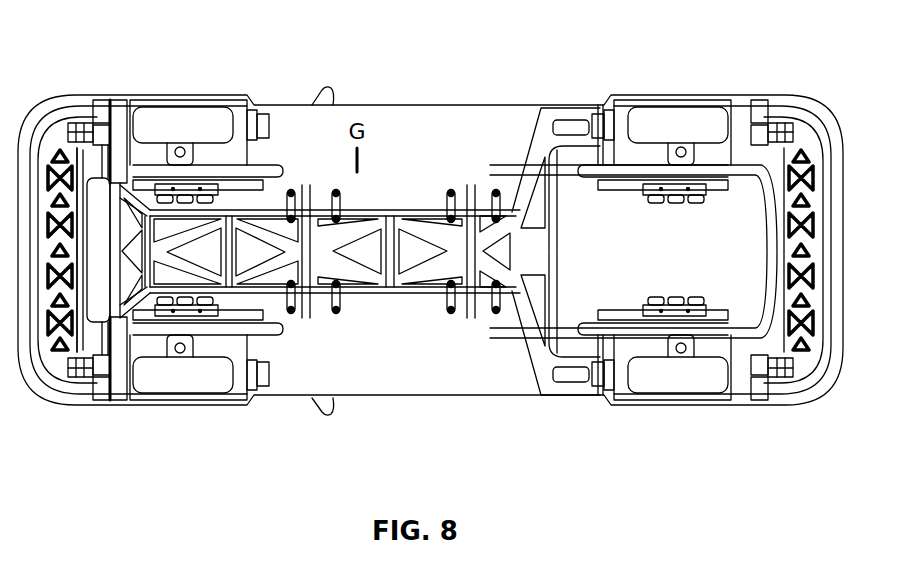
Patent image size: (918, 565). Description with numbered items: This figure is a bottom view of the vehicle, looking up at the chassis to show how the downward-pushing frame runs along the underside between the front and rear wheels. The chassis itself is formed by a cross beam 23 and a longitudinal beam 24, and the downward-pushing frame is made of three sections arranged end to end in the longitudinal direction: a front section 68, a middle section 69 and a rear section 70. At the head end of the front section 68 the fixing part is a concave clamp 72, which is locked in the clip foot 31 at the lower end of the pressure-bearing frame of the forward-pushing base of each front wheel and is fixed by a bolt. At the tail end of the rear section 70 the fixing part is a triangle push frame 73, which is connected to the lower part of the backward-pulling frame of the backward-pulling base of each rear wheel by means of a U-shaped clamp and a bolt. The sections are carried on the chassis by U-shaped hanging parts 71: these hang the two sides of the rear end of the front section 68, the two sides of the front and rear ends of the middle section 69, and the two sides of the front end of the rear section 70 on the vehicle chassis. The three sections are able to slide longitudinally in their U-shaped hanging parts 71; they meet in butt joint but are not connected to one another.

The cross beam 23 is at (82, 262).
The longitudinal beam 24 is at (180, 330).
The clip foot 31 is at (100, 132).
The front section of downward-pushing frame 68 is at (230, 217).
The middle section of downward-pushing frame 69 is at (392, 213).
The rear section of downward-pushing frame 70 is at (515, 205).
The U-shaped hanging part 71 is at (338, 307).
The concave clamp 72 is at (113, 123).
The triangle push frame 73 is at (572, 386).